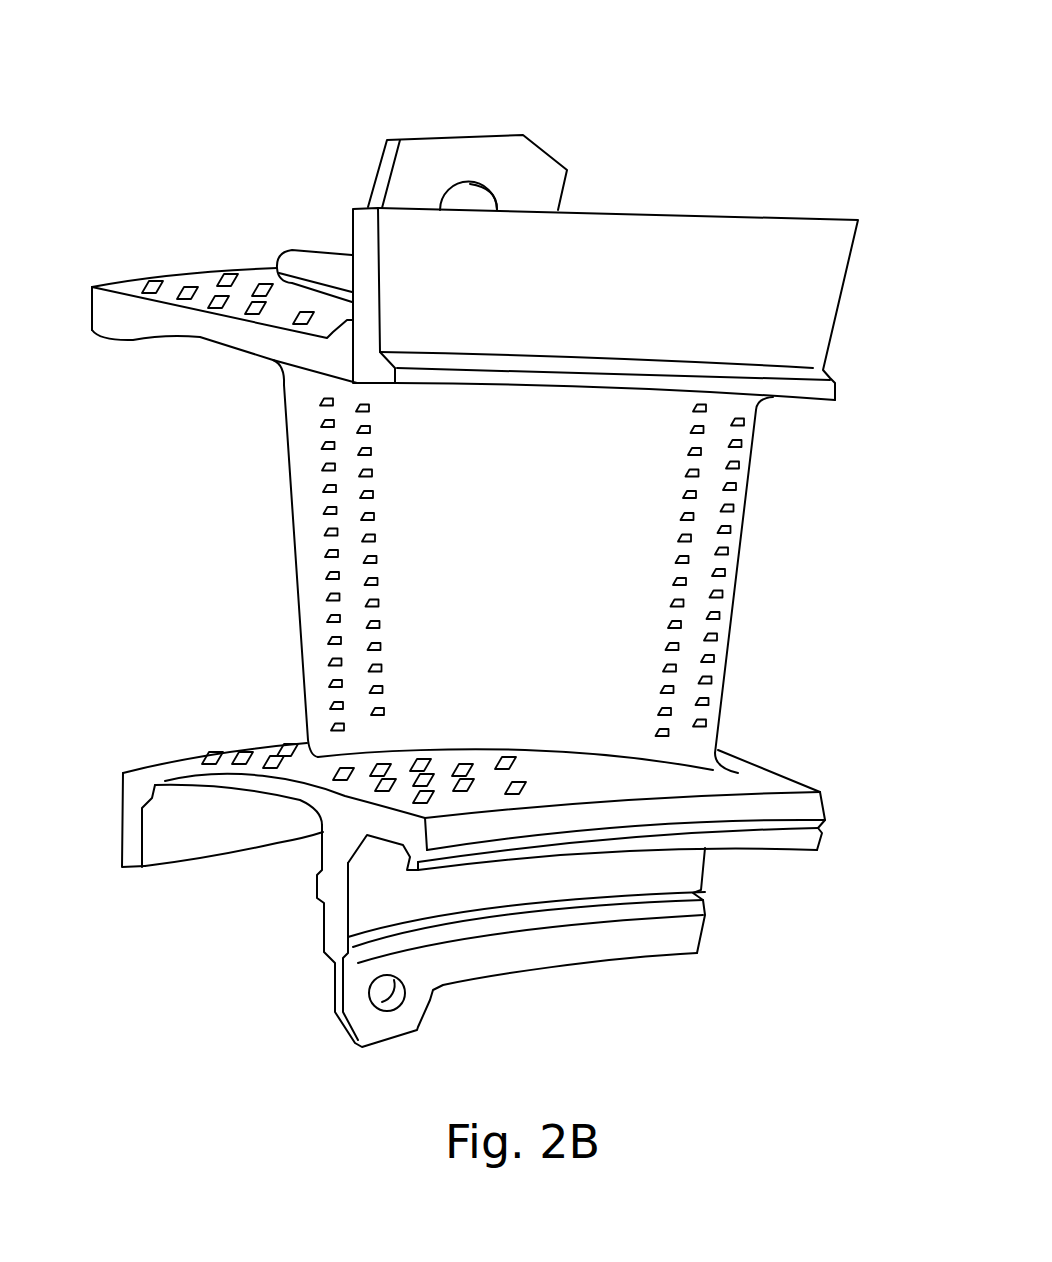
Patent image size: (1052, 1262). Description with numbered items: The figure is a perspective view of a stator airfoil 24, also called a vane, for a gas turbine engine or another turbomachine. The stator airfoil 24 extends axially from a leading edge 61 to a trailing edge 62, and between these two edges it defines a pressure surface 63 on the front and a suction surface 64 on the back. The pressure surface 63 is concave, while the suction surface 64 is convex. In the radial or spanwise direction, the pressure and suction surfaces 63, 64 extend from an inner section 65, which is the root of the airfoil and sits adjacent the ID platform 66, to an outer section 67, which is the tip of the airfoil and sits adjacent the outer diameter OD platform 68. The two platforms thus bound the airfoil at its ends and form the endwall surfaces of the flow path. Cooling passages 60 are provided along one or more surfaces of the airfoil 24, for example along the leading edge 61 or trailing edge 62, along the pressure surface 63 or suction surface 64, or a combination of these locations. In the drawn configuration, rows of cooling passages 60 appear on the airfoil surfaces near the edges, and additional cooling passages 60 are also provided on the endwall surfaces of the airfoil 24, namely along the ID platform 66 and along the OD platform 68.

The stator airfoil 24 is at (128, 130).
The cooling passages 60 is at (228, 273).
The leading edge 61 is at (285, 435).
The trailing edge 62 is at (728, 632).
The pressure surface 63 is at (435, 567).
The suction surface 64 is at (739, 568).
The inner section 65 is at (323, 737).
The ID platform 66 is at (810, 802).
The outer section 67 is at (300, 392).
The OD platform 68 is at (110, 322).